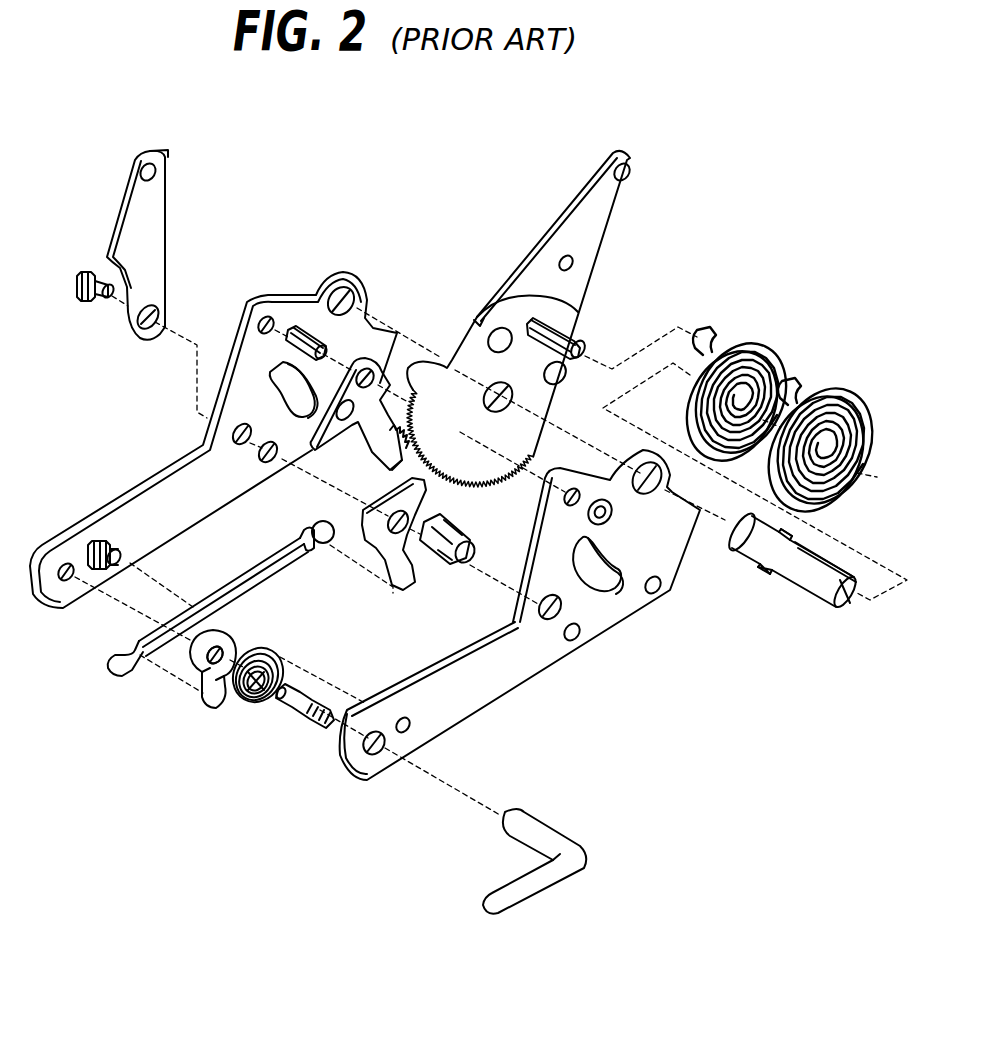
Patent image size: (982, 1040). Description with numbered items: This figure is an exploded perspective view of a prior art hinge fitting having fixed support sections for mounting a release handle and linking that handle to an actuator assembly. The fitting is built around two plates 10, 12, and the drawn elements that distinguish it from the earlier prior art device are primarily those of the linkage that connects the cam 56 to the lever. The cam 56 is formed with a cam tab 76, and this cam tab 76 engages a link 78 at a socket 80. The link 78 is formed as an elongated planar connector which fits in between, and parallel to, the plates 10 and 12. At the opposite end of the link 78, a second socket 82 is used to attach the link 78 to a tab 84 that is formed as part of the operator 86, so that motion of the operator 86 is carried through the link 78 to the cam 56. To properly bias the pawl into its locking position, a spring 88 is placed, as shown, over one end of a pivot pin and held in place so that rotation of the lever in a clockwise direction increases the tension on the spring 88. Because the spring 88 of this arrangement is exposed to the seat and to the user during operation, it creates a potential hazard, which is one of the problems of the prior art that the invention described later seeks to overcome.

The plate 10 is at (162, 500).
The plate 12 is at (518, 677).
The cam 56 is at (418, 503).
The cam tab 76 is at (408, 568).
The link 78 is at (253, 573).
The socket 80 is at (305, 532).
The socket 82 is at (133, 643).
The tab 84 is at (216, 702).
The operator 86 is at (200, 667).
The spring 88 is at (257, 702).